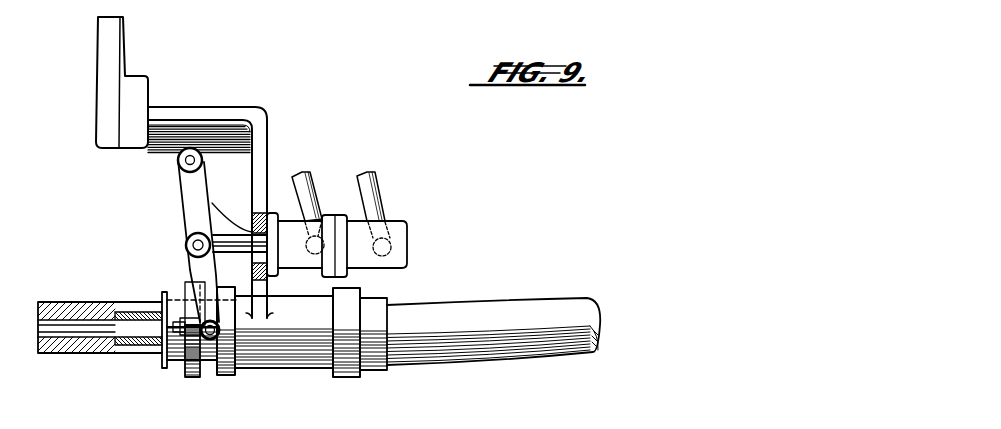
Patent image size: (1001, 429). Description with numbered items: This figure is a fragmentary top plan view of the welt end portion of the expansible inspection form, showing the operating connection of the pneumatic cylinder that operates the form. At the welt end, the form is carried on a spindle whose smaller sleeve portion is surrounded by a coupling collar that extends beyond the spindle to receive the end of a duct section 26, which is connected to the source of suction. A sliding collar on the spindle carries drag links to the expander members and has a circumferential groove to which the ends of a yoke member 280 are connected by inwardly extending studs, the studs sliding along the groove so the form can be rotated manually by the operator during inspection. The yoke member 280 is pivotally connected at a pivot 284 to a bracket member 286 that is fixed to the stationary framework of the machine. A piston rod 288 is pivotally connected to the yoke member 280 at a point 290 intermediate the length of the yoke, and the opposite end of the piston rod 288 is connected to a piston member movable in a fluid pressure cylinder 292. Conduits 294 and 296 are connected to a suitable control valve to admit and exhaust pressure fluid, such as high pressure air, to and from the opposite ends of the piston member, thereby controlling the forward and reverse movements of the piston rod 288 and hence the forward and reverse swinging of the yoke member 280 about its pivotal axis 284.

The duct section 26 is at (476, 315).
The yoke member 280 is at (180, 217).
The pivotal connection 284 is at (187, 162).
The bracket member 286 is at (183, 173).
The piston rod 288 is at (243, 253).
The pivot point 290 is at (193, 247).
The fluid pressure cylinder 292 is at (313, 268).
The conduit 294 is at (315, 187).
The conduit 296 is at (385, 201).